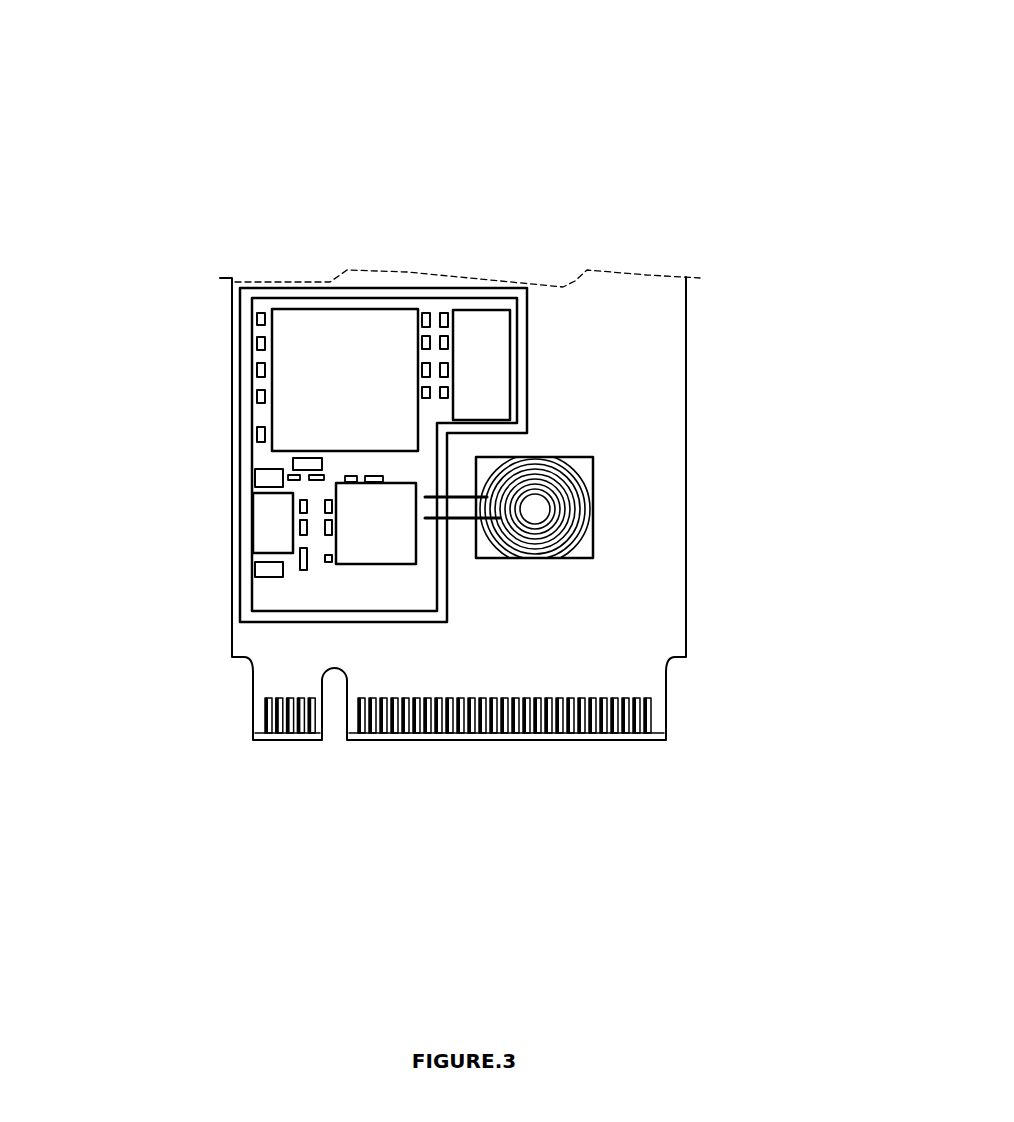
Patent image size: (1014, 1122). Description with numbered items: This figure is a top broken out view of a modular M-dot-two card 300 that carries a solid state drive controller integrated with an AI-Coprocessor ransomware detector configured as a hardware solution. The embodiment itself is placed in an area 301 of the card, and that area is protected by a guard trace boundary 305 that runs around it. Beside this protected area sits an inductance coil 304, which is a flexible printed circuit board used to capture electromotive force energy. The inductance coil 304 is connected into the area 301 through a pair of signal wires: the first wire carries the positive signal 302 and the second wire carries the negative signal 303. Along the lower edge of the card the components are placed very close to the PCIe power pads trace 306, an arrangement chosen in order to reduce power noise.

The modular M.2 card 300 is at (675, 305).
The area 301 is at (412, 307).
The positive signal 302 is at (425, 496).
The negative signal 303 is at (426, 520).
The inductance coil 304 is at (572, 560).
The guard trace boundary 305 is at (250, 615).
The PCIe power pads trace 306 is at (363, 700).